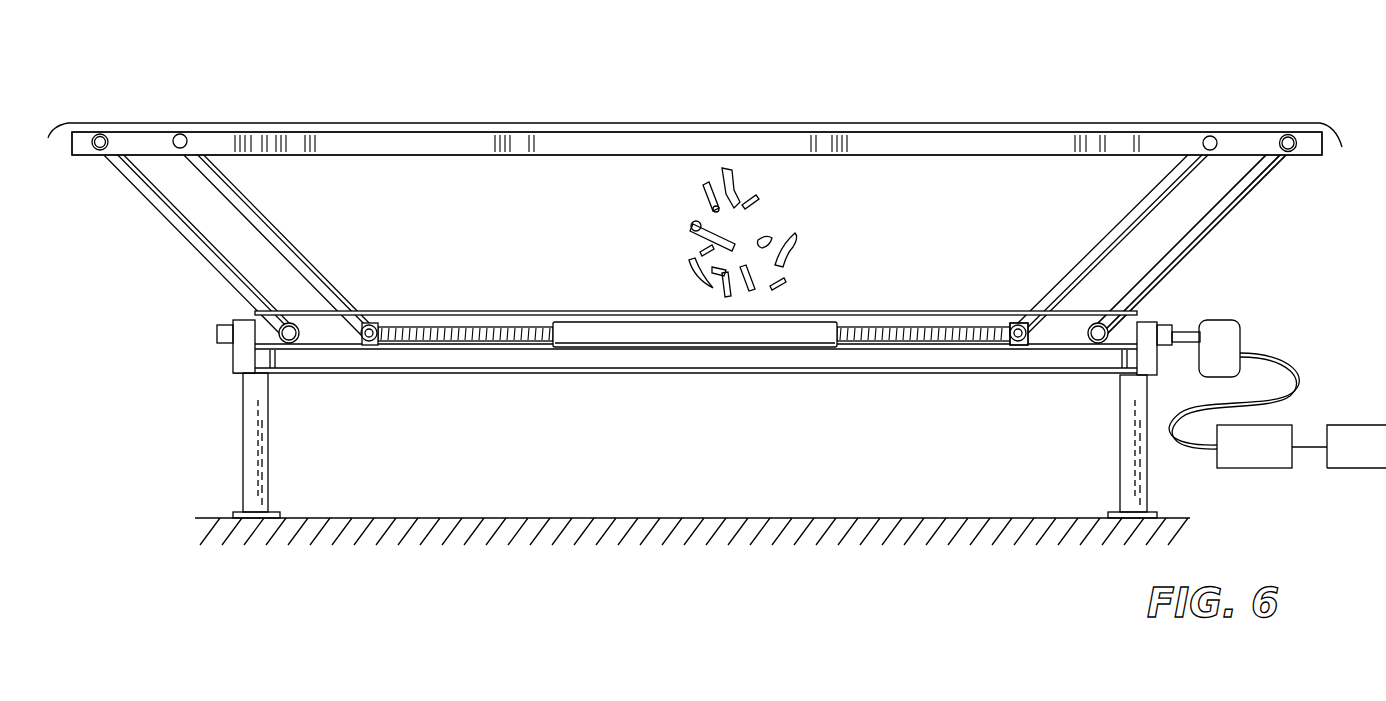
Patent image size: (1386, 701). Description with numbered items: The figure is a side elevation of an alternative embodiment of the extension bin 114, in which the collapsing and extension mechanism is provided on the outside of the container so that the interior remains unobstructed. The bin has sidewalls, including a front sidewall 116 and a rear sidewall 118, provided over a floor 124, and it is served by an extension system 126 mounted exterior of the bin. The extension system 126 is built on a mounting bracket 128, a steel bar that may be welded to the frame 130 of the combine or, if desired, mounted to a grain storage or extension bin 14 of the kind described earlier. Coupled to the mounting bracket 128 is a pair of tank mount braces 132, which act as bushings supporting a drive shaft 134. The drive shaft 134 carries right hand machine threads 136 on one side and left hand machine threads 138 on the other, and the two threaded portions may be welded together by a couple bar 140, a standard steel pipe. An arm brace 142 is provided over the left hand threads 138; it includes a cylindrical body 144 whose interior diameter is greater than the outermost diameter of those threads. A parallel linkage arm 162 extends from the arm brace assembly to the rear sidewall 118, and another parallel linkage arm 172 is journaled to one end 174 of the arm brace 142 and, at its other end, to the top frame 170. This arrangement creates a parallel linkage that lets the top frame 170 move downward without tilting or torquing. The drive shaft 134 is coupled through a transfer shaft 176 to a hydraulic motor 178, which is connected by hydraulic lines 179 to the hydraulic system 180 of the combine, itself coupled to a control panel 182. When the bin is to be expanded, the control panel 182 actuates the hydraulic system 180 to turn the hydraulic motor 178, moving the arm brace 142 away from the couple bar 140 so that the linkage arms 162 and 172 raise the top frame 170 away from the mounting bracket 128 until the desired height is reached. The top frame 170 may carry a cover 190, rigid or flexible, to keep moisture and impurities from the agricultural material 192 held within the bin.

The extension bin 14 is at (437, 517).
The extension bin 114 is at (353, 97).
The front sidewall 116 is at (170, 228).
The rear sidewall 118 is at (1224, 214).
The floor 124 is at (927, 311).
The extension system 126 is at (200, 263).
The mounting bracket 128 is at (552, 362).
The frame 130 is at (265, 437).
The tank mount brace 132 is at (247, 342).
The drive shaft 134 is at (457, 342).
The right hand machine threads 136 is at (418, 333).
The left hand machine threads 138 is at (950, 333).
The couple bar 140 is at (668, 330).
The arm brace 142 is at (1072, 336).
The cylindrical body 144 is at (1027, 348).
The parallel linkage arm 162 is at (1258, 176).
The top frame 170 is at (343, 145).
The parallel linkage arm 172 is at (1110, 240).
The end of arm brace 174 is at (1025, 330).
The transfer shaft 176 is at (1183, 333).
The hydraulic motor 178 is at (1225, 330).
The hydraulic lines 179 is at (1275, 352).
The hydraulic system 180 is at (1343, 464).
The control panel 182 is at (1240, 464).
The cover 190 is at (1140, 123).
The agricultural material 192 is at (722, 275).